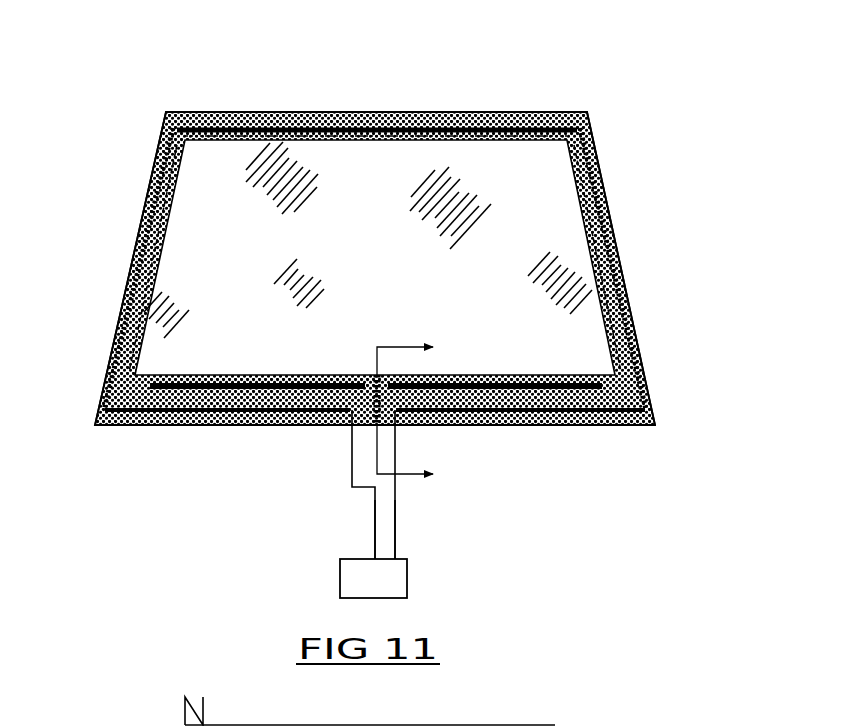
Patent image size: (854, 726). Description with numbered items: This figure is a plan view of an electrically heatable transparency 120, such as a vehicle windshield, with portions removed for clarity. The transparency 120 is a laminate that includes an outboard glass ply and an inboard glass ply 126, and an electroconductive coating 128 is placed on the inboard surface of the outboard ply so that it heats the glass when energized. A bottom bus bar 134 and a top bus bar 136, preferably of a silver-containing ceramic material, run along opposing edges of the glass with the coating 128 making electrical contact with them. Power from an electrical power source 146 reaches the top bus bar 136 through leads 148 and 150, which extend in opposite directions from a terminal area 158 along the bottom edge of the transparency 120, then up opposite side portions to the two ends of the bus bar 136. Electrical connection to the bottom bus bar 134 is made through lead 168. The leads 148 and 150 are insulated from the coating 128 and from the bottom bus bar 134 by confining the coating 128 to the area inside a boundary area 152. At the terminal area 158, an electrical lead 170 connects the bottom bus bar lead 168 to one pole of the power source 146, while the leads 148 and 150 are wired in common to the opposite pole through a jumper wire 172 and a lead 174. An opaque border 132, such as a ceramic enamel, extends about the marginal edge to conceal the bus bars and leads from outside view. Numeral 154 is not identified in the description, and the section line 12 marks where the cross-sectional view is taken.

The section line 12- 12 is at (425, 414).
The transparency 120 is at (384, 100).
The inboard glass ply 126 is at (556, 112).
The electroconductive coating 128 is at (560, 345).
The opaque border 132 is at (128, 315).
The bottom bus bar 134 is at (555, 390).
The top bus bar 136 is at (432, 114).
The electrical power source 146 is at (345, 565).
The lead 148 is at (165, 152).
The lead 150 is at (590, 160).
The boundary area 152 is at (610, 232).
The bottom edge strip 154 is at (212, 420).
The terminal area 158 is at (421, 504).
The lead 168 is at (379, 428).
The electrical lead 170 is at (375, 528).
The jumper wire 172 is at (396, 490).
The lead 174 is at (395, 538).